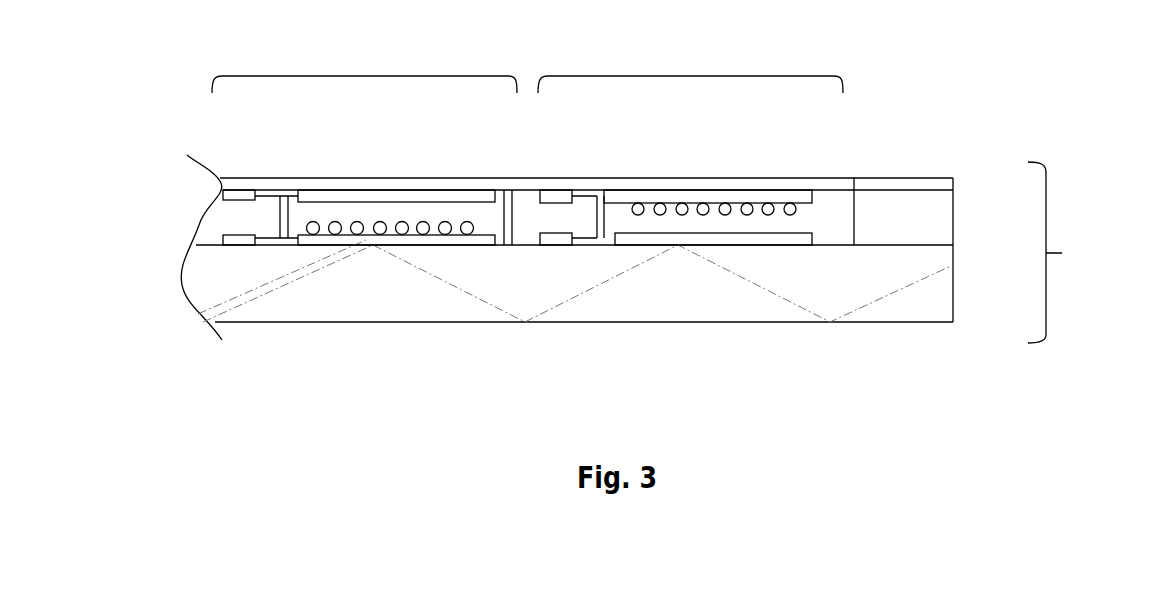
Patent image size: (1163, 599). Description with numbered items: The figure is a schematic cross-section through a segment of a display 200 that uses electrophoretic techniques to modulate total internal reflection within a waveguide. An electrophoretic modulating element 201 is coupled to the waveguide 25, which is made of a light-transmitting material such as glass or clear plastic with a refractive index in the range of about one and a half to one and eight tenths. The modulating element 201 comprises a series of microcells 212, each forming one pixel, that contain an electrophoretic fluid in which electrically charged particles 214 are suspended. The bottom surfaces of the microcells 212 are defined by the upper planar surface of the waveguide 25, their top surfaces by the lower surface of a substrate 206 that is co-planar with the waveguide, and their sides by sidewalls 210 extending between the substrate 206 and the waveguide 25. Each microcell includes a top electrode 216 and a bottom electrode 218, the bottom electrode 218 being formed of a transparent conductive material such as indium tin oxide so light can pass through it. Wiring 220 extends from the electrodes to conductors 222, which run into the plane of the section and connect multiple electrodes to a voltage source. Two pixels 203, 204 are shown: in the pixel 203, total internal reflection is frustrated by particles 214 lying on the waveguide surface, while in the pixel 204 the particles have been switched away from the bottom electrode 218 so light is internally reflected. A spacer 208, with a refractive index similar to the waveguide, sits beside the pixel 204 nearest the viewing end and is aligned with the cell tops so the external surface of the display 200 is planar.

The electronic device / module 200 is at (1089, 252).
The electrophoretic modulating element 201 is at (958, 212).
The waveguide 25 is at (958, 290).
The pixel 203 is at (363, 76).
The pixel 204 is at (692, 76).
The substrate 206 is at (291, 190).
The spacer 208 is at (893, 178).
The spacer / support wall 210 is at (508, 192).
The microcells 212 is at (832, 222).
The electrically charged particles 214 is at (796, 200).
The top electrode 216 is at (718, 196).
The bottom electrode 218 is at (783, 242).
The wiring 220 is at (587, 192).
The conductors 222 is at (546, 194).